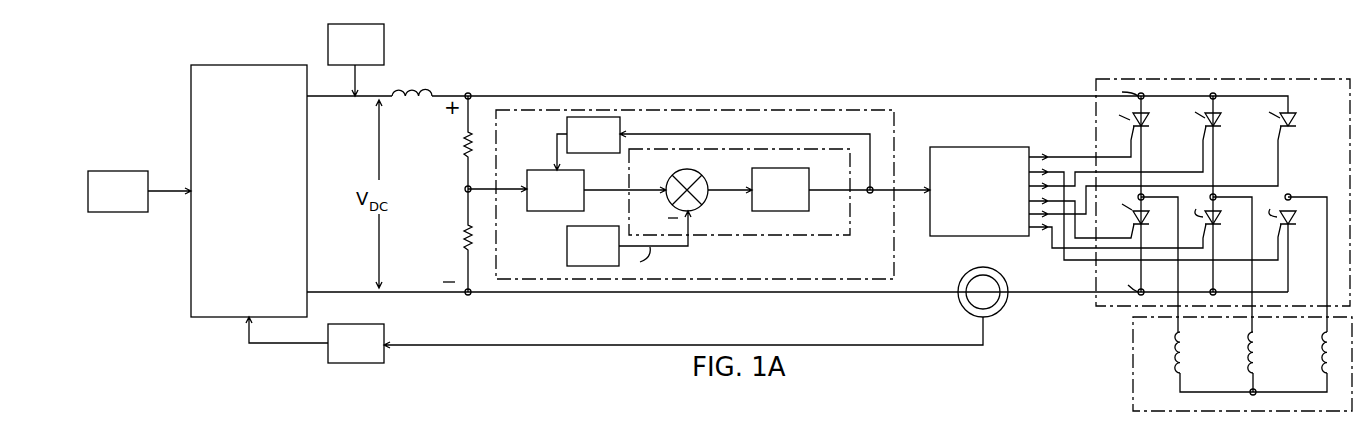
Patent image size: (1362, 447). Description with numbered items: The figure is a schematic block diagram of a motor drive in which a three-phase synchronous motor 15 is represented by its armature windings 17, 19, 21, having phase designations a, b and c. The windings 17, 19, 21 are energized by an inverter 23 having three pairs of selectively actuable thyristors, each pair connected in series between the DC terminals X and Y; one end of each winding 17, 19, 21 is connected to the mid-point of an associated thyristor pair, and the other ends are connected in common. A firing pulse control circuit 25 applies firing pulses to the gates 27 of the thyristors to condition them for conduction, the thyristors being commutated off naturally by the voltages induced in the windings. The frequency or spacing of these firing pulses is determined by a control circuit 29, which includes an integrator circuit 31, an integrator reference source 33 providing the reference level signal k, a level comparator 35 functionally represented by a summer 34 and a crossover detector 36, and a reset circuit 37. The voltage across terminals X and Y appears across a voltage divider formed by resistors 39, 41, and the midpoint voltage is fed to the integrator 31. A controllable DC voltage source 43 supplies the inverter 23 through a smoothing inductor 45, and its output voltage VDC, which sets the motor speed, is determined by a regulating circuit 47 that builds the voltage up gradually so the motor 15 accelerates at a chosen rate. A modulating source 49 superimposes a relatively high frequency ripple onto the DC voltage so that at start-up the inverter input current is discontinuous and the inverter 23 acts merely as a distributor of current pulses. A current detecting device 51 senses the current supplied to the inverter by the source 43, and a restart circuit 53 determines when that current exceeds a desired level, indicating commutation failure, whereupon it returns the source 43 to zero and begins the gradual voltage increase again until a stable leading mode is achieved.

The three-phase synchronous motor 15 is at (1219, 364).
The armature winding 17 is at (1183, 348).
The armature winding 19 is at (1256, 348).
The armature winding 21 is at (1330, 353).
The inverter 23 is at (1217, 191).
The firing pulse control circuit 25 is at (970, 201).
The gates 27 is at (1131, 133).
The control circuit 29 is at (925, 133).
The integrator circuit 31 is at (546, 200).
The integrator reference source 33 is at (583, 256).
The summer 34 is at (700, 175).
The level comparator 35 is at (840, 235).
The crossover detector 36 is at (771, 200).
The reset circuit 37 is at (584, 145).
The resistor 39 is at (464, 144).
The resistor 41 is at (464, 232).
The controllable DC voltage source 43 is at (239, 205).
The smoothing inductor 45 is at (413, 103).
The regulating circuit 47 is at (108, 205).
The modulating source 49 is at (346, 55).
The current detecting device 51 is at (975, 270).
The restart circuit 53 is at (346, 354).